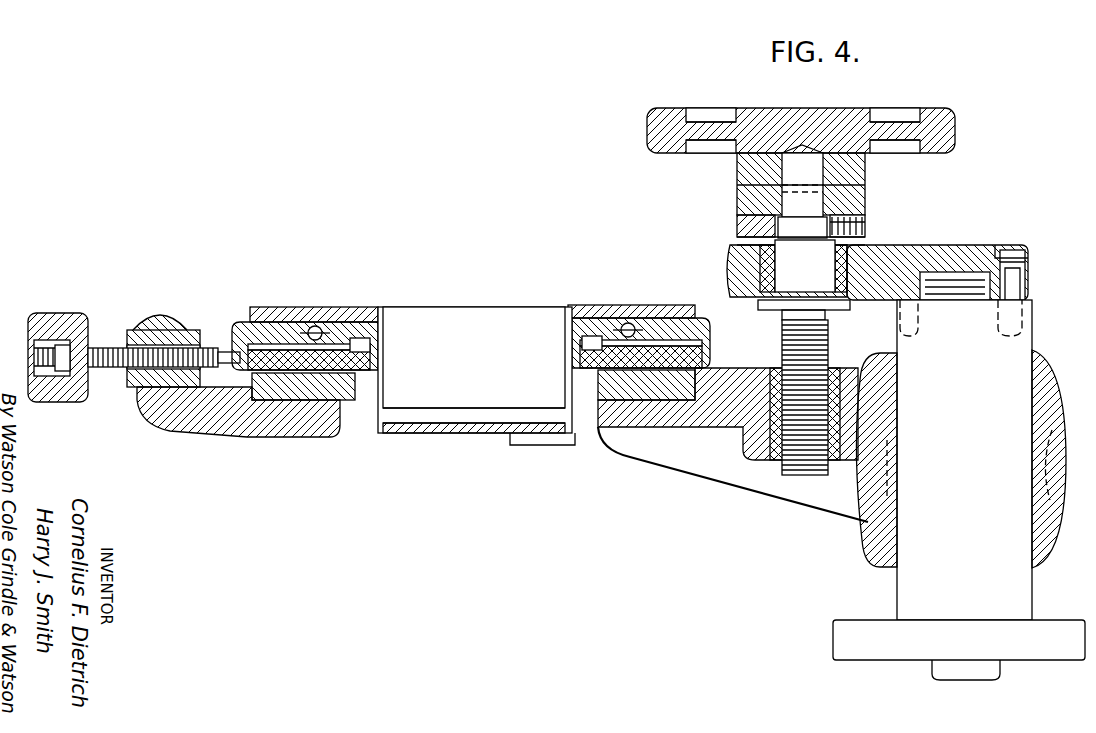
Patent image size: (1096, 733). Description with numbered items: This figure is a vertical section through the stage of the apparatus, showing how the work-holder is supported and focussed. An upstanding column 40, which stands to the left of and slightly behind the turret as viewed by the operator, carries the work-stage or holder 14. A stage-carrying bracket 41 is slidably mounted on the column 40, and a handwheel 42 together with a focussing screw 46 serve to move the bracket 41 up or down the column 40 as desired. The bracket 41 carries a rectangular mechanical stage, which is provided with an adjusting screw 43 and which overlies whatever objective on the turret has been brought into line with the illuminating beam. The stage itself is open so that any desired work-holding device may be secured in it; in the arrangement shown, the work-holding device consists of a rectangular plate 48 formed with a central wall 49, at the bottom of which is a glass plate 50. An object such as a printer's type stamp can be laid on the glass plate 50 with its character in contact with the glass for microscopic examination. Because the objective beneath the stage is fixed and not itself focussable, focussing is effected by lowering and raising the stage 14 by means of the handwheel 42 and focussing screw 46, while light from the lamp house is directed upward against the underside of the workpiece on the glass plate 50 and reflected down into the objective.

The work-stage or holder 14 is at (202, 413).
The upstanding column 40 is at (927, 577).
The stage-carrying bracket 41 is at (878, 517).
The handwheel 42 is at (648, 116).
The adjusting screw 43 is at (73, 402).
The focussing screw 46 is at (785, 462).
The rectangular plate 48 is at (362, 318).
The central wall 49 is at (378, 413).
The glass plate 50 is at (433, 435).